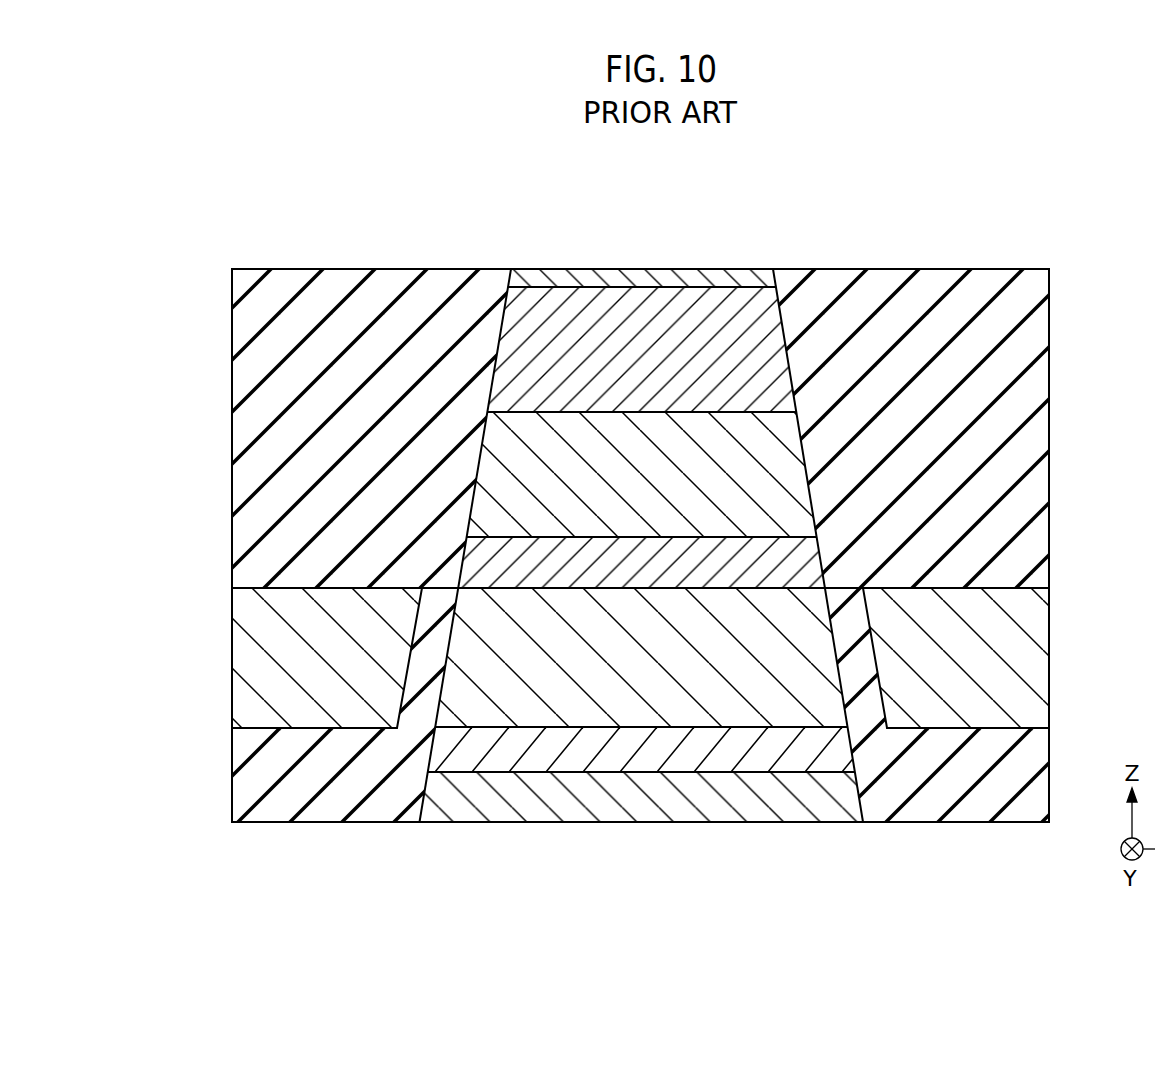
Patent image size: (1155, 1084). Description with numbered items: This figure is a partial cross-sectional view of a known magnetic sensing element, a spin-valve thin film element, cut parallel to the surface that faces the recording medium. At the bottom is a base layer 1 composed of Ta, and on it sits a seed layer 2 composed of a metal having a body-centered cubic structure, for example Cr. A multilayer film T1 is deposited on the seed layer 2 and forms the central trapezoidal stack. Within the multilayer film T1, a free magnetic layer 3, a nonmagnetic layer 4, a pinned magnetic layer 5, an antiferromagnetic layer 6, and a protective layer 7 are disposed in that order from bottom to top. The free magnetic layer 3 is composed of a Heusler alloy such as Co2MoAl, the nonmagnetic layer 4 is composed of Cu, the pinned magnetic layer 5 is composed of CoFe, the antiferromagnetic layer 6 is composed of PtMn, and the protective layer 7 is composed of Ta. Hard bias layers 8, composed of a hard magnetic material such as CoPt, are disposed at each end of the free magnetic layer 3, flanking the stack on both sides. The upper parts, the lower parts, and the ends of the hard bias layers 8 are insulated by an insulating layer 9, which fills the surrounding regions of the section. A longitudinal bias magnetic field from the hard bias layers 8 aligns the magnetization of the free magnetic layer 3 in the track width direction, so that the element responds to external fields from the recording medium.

The base layer 1 is at (468, 790).
The seed layer 2 is at (535, 752).
The free magnetic layer 3 is at (623, 683).
The nonmagnetic layer 4 is at (692, 563).
The pinned magnetic layer 5 is at (765, 487).
The antiferromagnetic layer 6 is at (688, 318).
The protective layer 7 is at (632, 277).
The hard bias layers 8 is at (270, 663).
The insulating layer 9 is at (267, 388).
The multilayer film T1 is at (641, 674).